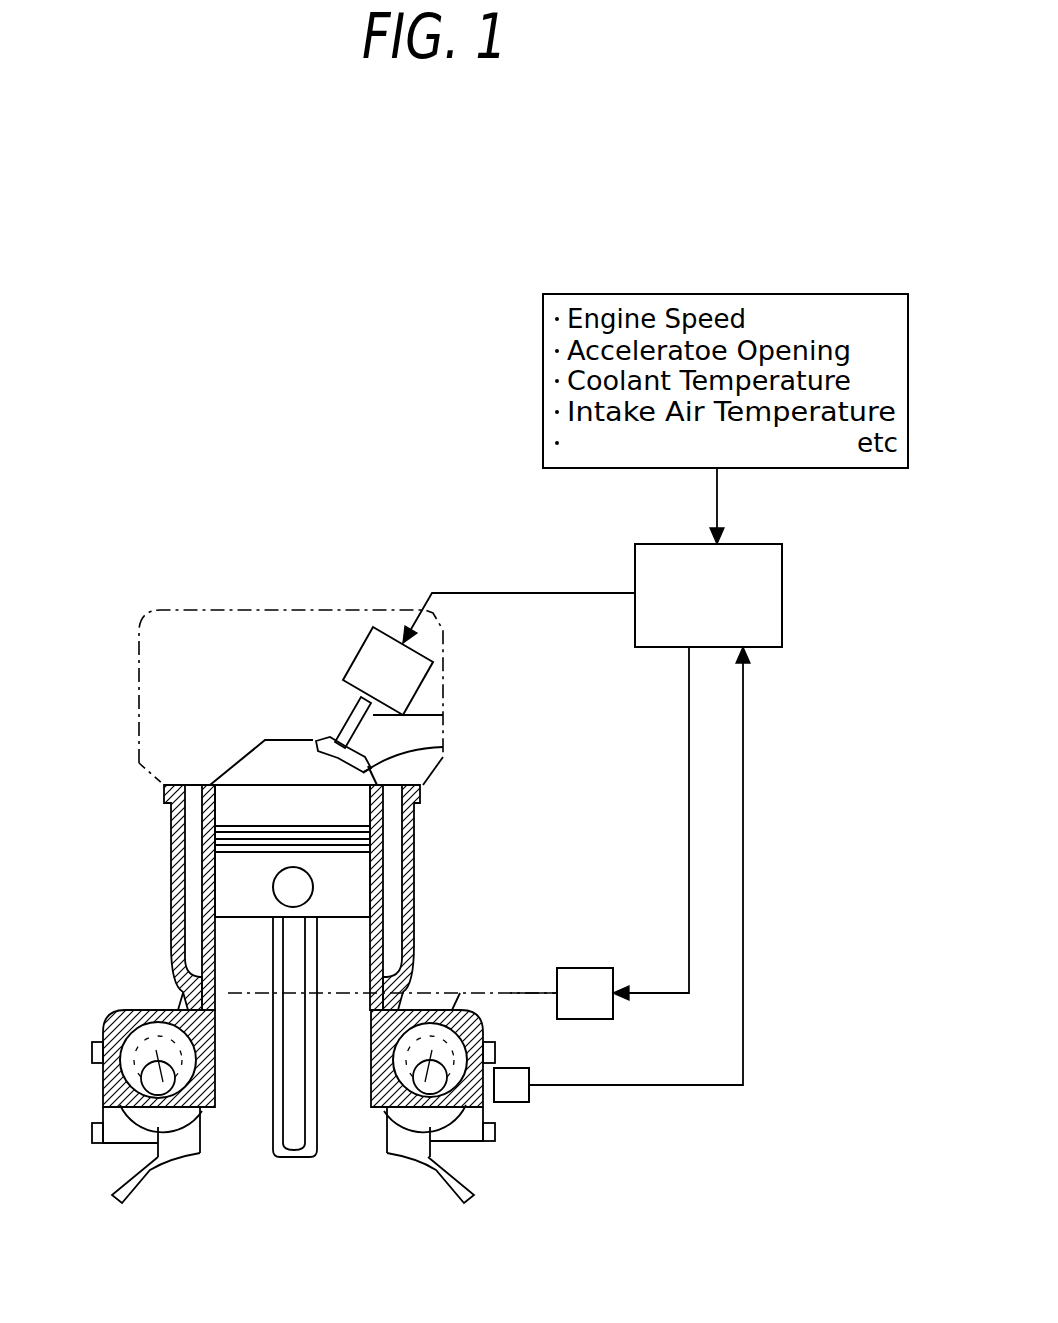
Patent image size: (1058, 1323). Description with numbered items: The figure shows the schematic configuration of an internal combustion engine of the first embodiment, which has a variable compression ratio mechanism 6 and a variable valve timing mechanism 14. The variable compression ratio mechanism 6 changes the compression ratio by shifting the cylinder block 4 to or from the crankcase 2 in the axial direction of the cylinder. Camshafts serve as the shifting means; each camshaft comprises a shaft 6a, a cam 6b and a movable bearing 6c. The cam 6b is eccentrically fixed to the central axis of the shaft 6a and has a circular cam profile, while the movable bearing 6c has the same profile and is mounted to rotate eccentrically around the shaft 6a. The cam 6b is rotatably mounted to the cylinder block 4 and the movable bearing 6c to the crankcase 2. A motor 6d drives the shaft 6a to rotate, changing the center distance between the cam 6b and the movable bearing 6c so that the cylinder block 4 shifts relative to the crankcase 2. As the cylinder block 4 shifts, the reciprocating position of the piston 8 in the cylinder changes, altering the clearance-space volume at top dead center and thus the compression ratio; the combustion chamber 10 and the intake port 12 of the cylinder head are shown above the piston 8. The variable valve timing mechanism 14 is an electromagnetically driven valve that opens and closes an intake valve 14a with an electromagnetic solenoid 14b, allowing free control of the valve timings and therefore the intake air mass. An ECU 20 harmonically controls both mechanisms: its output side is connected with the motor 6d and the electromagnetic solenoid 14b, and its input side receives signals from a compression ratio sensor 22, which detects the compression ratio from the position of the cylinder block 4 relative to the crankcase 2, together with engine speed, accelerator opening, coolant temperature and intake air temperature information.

The crankcase 2 is at (467, 1181).
The cylinder block 4 is at (417, 932).
The variable compression ratio mechanism 6 is at (553, 1143).
The shaft 6a is at (167, 1087).
The cam 6b is at (118, 1022).
The movable bearing 6c is at (140, 1117).
The motor 6d is at (585, 968).
The piston 8 is at (347, 868).
The combustion chamber 10 is at (240, 792).
The intake port 12 is at (427, 710).
The variable valve timing mechanism 14 is at (325, 710).
The intake valve 14a is at (347, 715).
The electromagnetic solenoid 14b is at (350, 667).
The ECU 20 is at (770, 544).
The compression ratio sensor 22 is at (522, 1068).